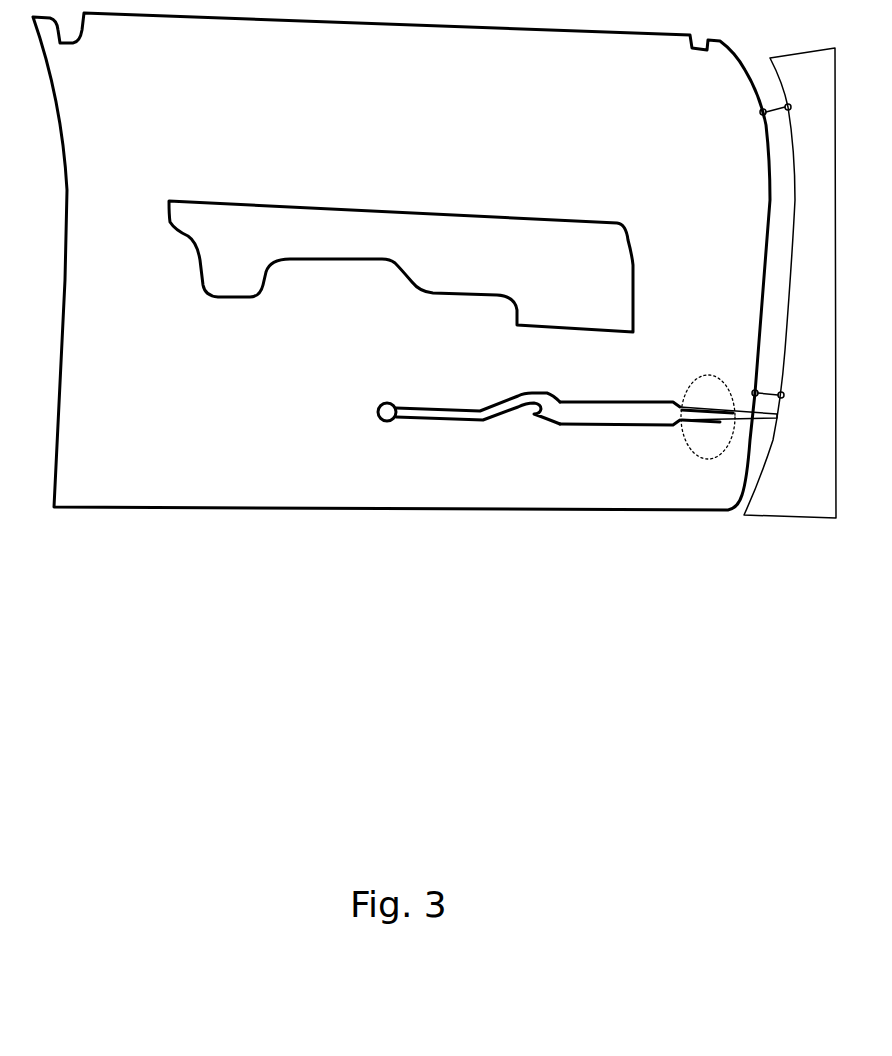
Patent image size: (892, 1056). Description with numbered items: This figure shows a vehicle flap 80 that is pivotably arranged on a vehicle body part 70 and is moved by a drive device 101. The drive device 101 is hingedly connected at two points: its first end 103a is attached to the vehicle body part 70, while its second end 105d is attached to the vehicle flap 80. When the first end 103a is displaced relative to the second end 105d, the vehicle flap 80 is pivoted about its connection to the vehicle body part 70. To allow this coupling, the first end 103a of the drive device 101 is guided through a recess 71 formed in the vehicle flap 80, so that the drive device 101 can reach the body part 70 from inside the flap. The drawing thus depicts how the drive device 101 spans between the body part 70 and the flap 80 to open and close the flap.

The vehicle flap 80 is at (143, 508).
The vehicle body part 70 is at (790, 520).
The recess 71 is at (728, 397).
The second end 105d is at (532, 415).
The drive device 101 is at (597, 425).
The first end 103a is at (767, 440).